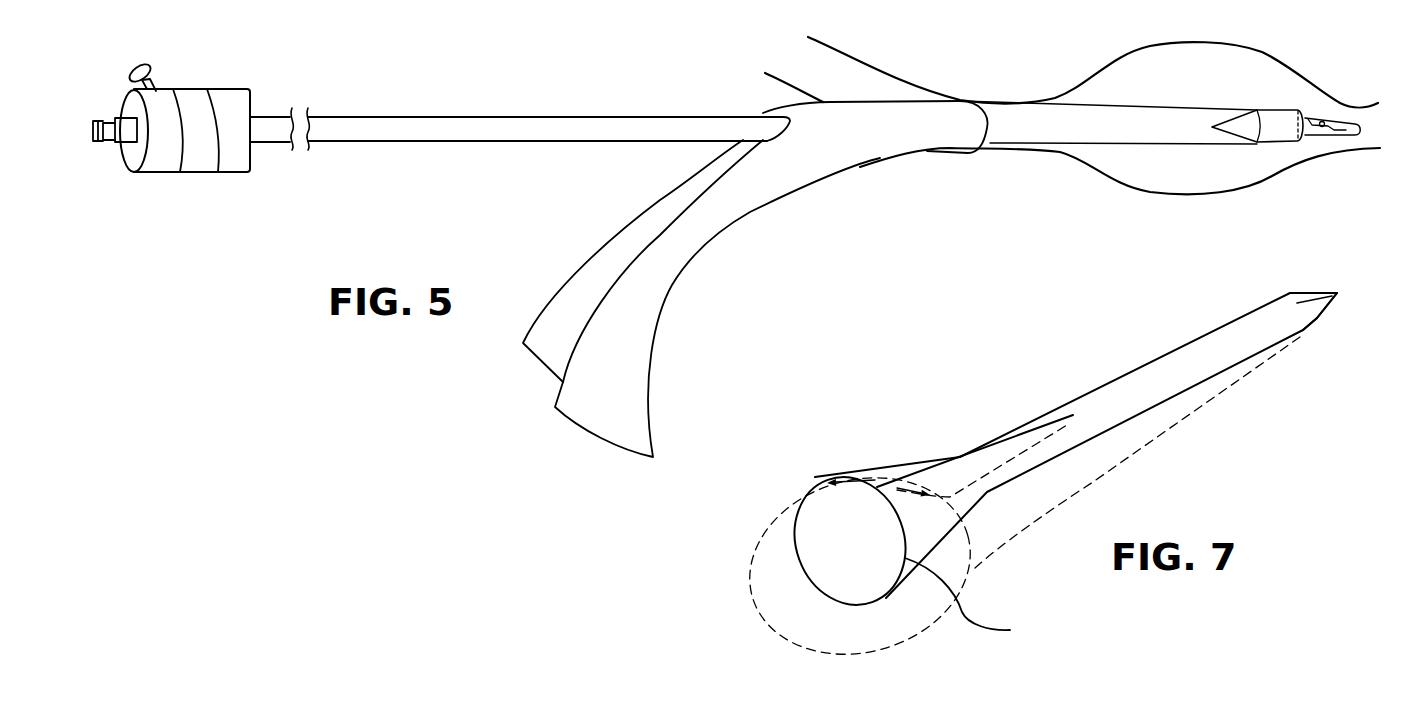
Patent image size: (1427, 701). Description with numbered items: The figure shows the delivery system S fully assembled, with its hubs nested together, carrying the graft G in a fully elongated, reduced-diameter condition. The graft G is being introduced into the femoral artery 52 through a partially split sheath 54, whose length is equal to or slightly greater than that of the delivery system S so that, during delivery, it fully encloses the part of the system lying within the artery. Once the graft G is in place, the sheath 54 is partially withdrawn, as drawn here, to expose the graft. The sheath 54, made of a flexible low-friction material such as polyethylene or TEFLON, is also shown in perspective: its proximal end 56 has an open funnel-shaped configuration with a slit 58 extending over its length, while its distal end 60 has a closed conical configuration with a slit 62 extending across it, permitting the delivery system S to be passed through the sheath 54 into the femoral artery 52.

In FIG. 5, the delivery system S is at (388, 102).
In FIG. 5, the graft G is at (1246, 94).
In FIG. 5, the femoral artery 52 is at (940, 93).
In FIG. 5, the sheath 54 is at (891, 89).
In FIG. 7, the sheath 54 is at (977, 570).
In FIG. 5, the proximal end of the sheath 56 is at (625, 222).
In FIG. 7, the slit 58 is at (1007, 447).
In FIG. 5, the distal end of the sheath 60 is at (1243, 137).
In FIG. 7, the distal end of the sheath 60 is at (1320, 318).
In FIG. 5, the slit 62 is at (1332, 126).
In FIG. 7, the slit 62 is at (1312, 295).